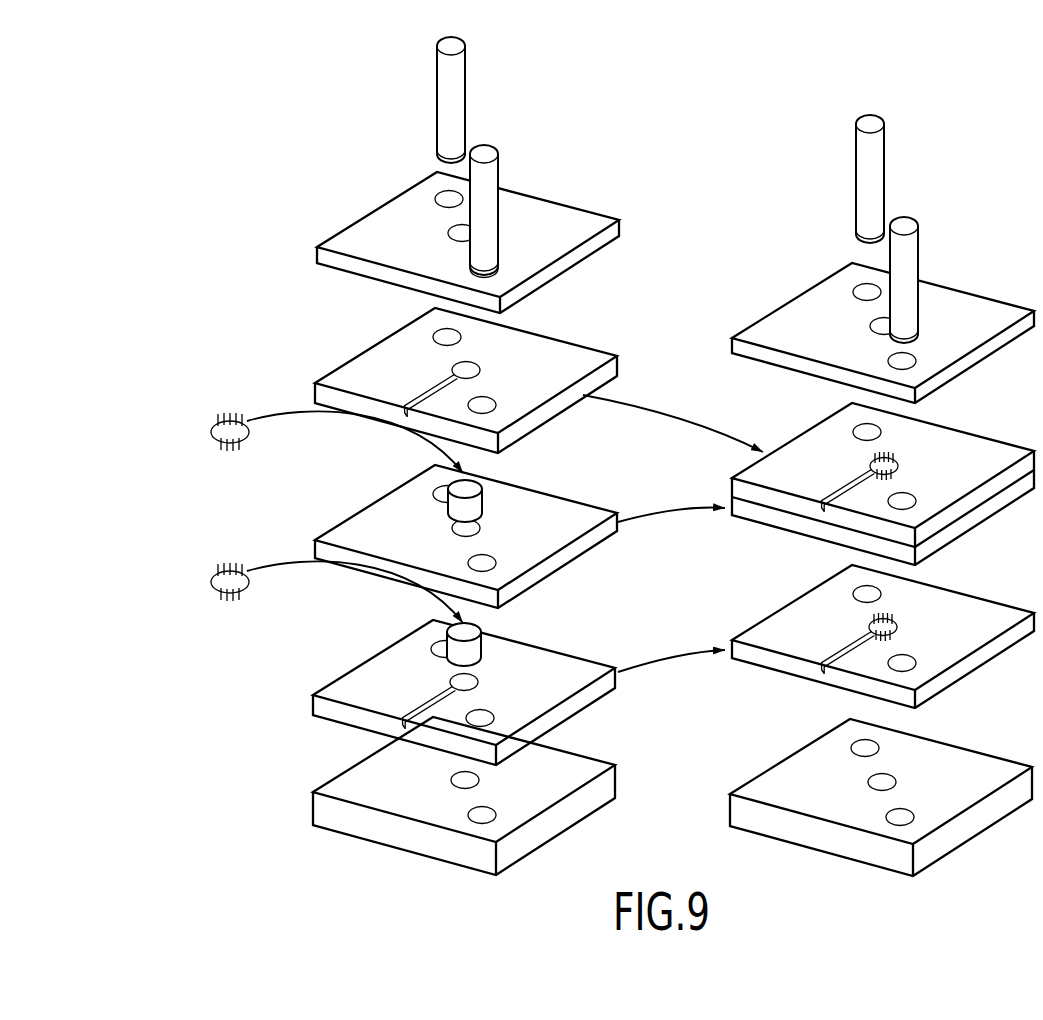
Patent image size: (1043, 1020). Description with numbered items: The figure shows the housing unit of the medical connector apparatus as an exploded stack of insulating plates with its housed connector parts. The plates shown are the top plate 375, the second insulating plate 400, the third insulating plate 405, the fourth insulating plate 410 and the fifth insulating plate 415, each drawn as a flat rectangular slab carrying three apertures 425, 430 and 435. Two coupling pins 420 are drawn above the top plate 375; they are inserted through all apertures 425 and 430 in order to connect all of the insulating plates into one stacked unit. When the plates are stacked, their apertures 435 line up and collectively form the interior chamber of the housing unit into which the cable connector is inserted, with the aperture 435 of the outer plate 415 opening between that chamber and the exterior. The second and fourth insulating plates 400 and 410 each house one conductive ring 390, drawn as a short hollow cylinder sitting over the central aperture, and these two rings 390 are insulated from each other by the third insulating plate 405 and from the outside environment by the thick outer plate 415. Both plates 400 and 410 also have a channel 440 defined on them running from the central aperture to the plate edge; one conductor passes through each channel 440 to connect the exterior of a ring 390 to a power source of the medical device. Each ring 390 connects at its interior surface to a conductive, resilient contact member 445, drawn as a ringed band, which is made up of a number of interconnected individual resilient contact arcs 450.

The top plate 375 is at (330, 228).
The conductive ring 390 is at (440, 507).
The second insulating plate 400 is at (312, 383).
The third insulating plate 405 is at (312, 530).
The fourth insulating plate 410 is at (313, 690).
The fifth insulating plate 415 is at (313, 790).
The coupling pin 420 is at (430, 65).
The aperture 425 is at (440, 332).
The aperture 430 is at (505, 412).
The aperture 435 is at (462, 223).
The channel 440 is at (437, 380).
The resilient contact member 445 is at (192, 430).
The resilient contact arc 450 is at (218, 416).